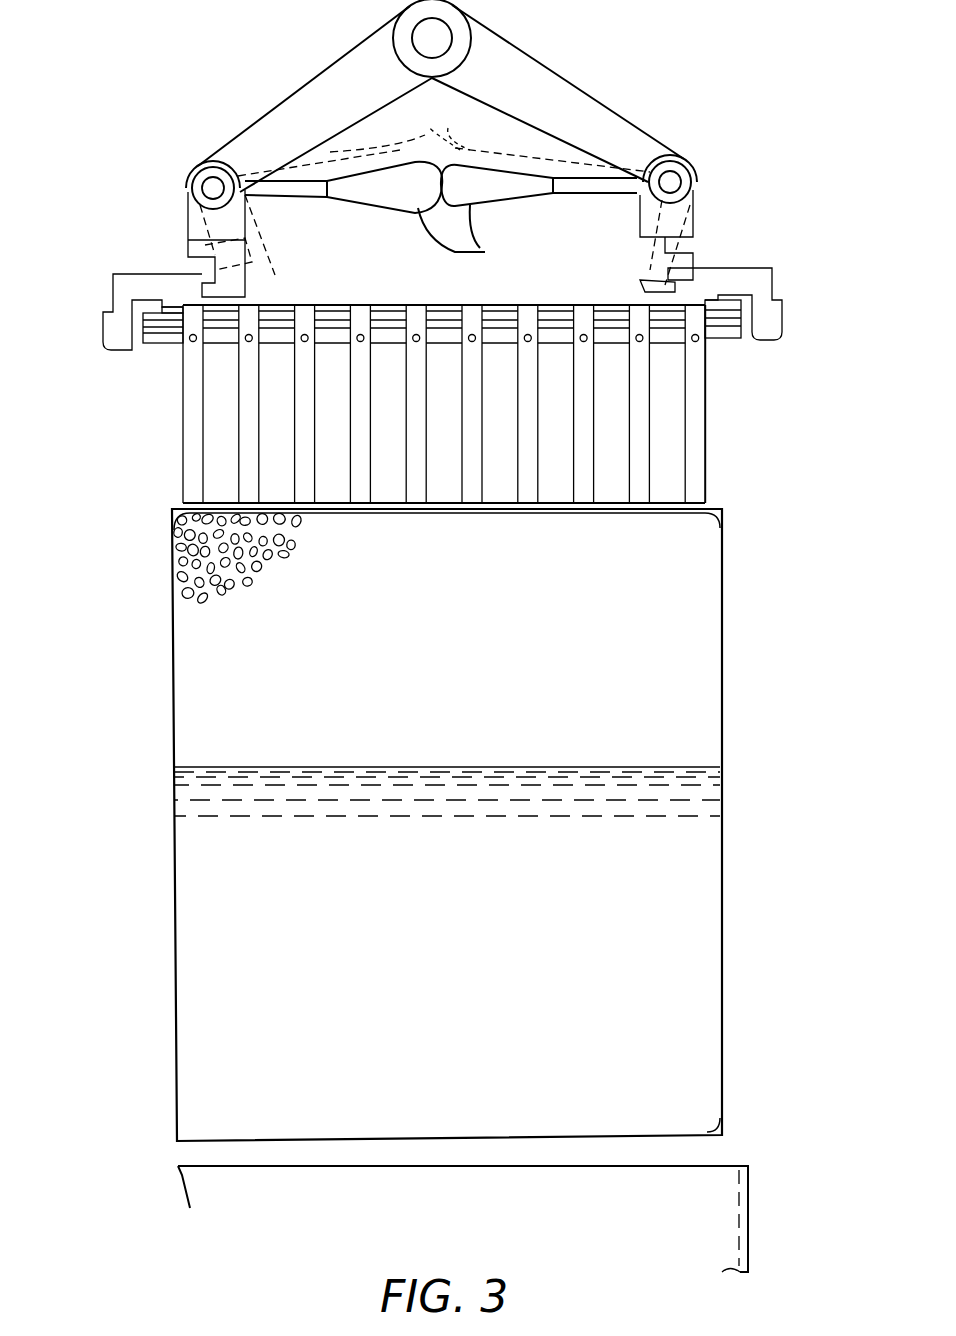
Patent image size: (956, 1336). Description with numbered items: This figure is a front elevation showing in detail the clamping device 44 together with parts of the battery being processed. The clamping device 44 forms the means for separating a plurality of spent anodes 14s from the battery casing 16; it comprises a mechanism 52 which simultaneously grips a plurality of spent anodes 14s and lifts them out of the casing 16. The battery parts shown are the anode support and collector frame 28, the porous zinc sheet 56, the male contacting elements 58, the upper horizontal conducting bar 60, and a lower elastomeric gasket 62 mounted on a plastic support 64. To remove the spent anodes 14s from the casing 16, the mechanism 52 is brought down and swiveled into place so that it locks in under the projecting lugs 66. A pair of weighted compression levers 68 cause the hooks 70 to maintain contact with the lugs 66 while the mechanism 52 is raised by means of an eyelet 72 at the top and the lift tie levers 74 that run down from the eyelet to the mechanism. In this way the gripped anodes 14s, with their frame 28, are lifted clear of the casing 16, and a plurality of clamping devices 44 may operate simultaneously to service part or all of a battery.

The eyelet 72 is at (452, 32).
The lift tie levers 74 is at (322, 98).
The mechanism 52 is at (708, 163).
The weighted compression levers 68 is at (444, 200).
The hooks 70 is at (245, 297).
The projecting lugs 66 is at (675, 280).
The plastic support 64 is at (155, 345).
The male contacting elements 58 is at (775, 340).
The lower elastomeric gasket 62 is at (722, 338).
The upper horizontal conducting bar 60 is at (440, 305).
The anode support and collector frame 28 is at (706, 460).
The spent anodes 14s is at (738, 650).
The clamping device 44 is at (150, 620).
The porous zinc sheet 56 is at (178, 540).
The battery casing 16 is at (745, 1207).